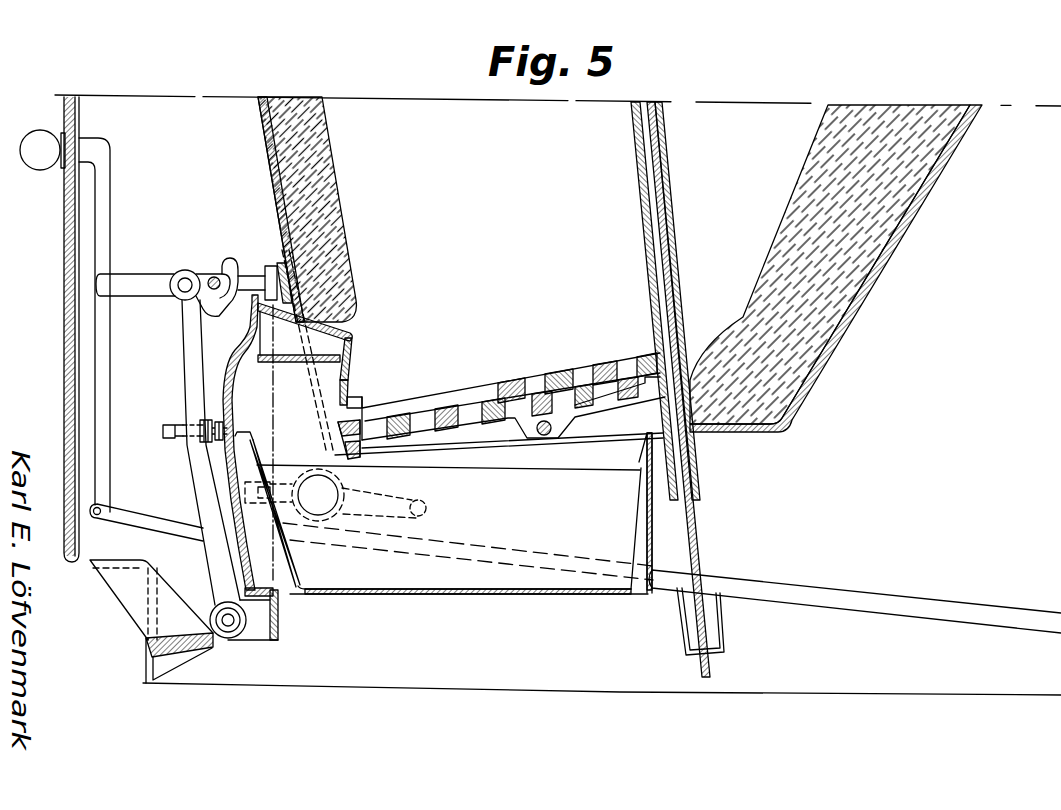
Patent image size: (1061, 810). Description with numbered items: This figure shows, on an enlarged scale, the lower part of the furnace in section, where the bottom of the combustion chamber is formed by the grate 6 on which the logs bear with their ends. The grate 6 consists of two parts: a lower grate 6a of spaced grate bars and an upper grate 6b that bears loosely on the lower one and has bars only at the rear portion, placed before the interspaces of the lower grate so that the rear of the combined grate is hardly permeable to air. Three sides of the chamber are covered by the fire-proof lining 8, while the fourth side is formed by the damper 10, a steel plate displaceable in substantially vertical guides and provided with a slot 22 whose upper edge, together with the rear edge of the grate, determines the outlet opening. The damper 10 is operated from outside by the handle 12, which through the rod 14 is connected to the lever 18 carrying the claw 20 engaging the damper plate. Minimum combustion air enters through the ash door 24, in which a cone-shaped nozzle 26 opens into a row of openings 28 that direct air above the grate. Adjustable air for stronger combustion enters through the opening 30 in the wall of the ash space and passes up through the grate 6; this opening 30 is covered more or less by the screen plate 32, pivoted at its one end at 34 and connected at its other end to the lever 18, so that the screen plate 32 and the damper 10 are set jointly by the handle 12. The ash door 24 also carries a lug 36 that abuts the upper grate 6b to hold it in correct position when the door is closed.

The grate 6 is at (455, 393).
The lower grate 6a is at (492, 422).
The upper grate 6b is at (556, 368).
The fire-proof lining 8 is at (324, 173).
The damper 10 is at (656, 243).
The handle 12 is at (32, 166).
The rod 14 is at (105, 343).
The lever 18 is at (131, 513).
The claw 20 is at (717, 628).
The slot 22 is at (661, 311).
The ash door 24 is at (229, 384).
The nozzle 26 is at (325, 340).
The openings 28 is at (352, 349).
The opening 30 is at (325, 516).
The screen plate 32 is at (380, 500).
The pivot 34 is at (426, 508).
The lug 36 is at (344, 383).